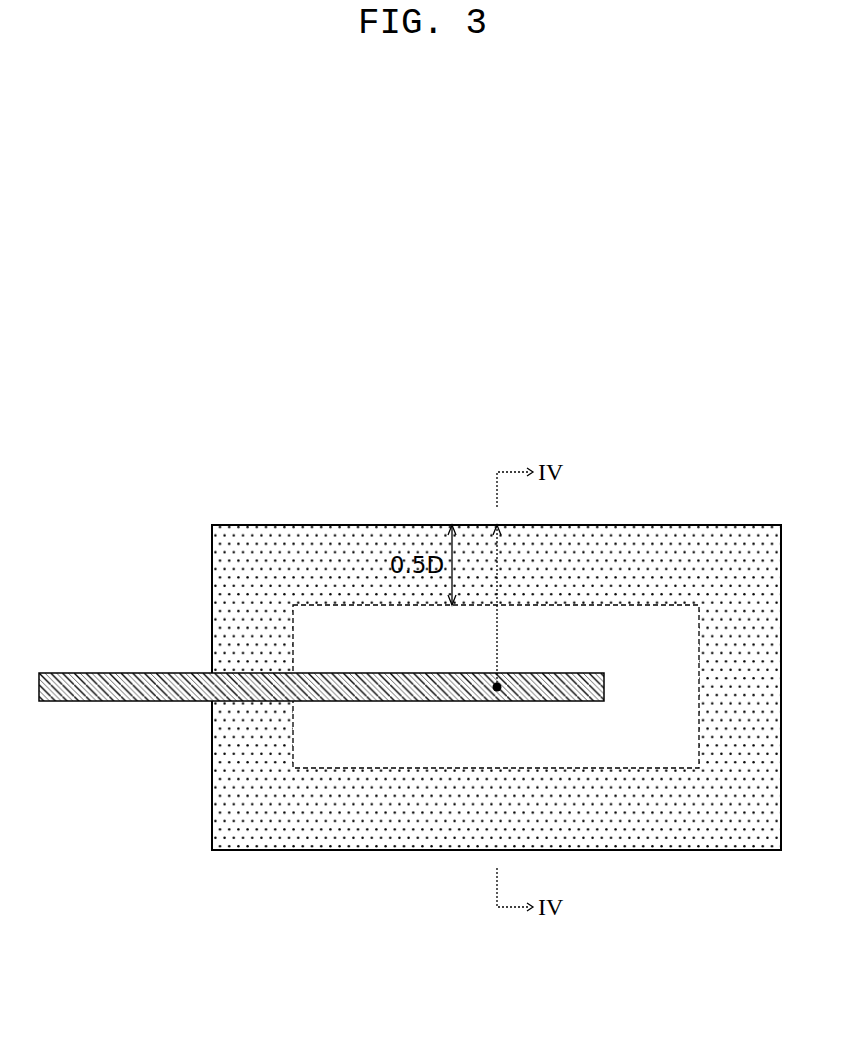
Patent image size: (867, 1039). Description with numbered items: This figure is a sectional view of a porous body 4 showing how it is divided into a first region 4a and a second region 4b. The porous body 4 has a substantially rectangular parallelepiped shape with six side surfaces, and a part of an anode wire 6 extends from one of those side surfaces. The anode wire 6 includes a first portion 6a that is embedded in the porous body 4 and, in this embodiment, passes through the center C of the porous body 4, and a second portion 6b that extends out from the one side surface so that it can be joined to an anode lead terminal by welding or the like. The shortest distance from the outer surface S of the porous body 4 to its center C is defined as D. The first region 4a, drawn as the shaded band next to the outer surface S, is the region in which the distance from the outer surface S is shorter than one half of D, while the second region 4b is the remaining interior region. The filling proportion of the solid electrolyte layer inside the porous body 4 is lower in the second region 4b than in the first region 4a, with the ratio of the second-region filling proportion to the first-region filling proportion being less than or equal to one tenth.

The porous body 4 is at (263, 462).
The first region 4a is at (300, 572).
The second region 4b is at (348, 620).
The anode wire 6 is at (321, 750).
The first portion 6a is at (258, 686).
The second portion 6b is at (80, 690).
The outer surface S is at (703, 522).
The center C is at (487, 690).
The shortest distance D is at (505, 606).